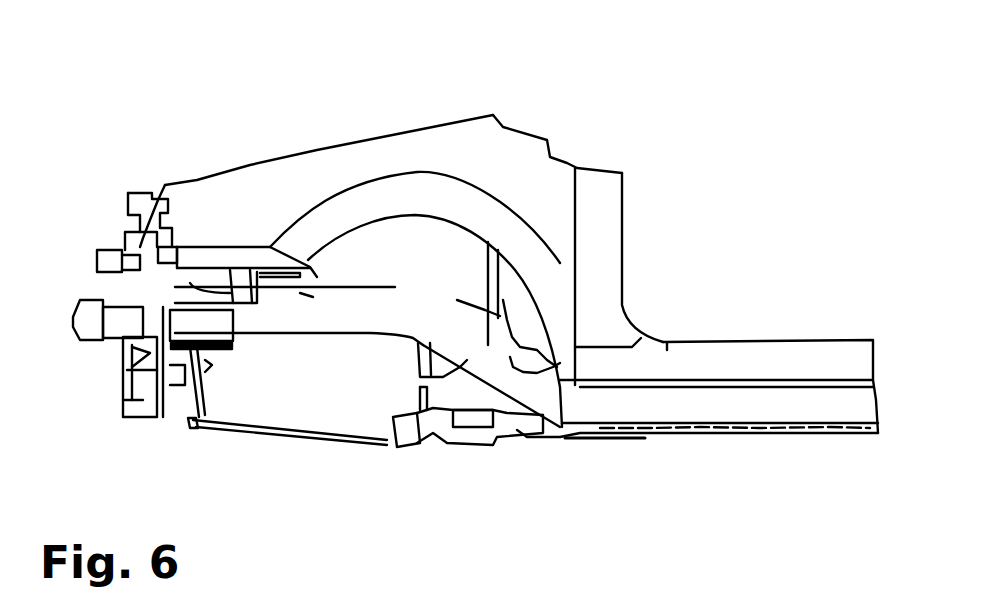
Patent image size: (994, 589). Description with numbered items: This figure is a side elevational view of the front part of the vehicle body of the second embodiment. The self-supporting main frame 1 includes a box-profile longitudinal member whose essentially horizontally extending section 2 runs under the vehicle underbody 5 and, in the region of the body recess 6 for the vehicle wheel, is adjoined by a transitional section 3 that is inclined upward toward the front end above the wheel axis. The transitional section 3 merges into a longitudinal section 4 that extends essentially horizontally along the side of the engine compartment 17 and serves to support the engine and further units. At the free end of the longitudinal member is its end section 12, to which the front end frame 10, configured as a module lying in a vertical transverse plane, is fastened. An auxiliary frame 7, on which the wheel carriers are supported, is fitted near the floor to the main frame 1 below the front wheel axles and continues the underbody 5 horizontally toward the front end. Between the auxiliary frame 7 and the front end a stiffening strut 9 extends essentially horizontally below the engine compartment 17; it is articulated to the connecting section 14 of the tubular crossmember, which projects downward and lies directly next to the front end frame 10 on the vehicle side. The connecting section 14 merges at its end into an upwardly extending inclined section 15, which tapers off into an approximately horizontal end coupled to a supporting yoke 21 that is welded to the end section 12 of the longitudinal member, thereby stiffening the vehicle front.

The main frame 1 is at (560, 178).
The horizontally extending section 2 is at (630, 436).
The transitional section 3 is at (487, 348).
The longitudinal section 4 is at (332, 314).
The vehicle underbody 5 is at (787, 434).
The body recess 6 is at (413, 242).
The auxiliary frame 7 is at (435, 422).
The stiffening strut 9 is at (267, 434).
The front end frame 10 is at (153, 240).
The end section 12 is at (137, 313).
The connecting section 14 is at (193, 424).
The inclined section 15 is at (189, 416).
The engine compartment 17 is at (270, 393).
The supporting yoke 21 is at (202, 322).